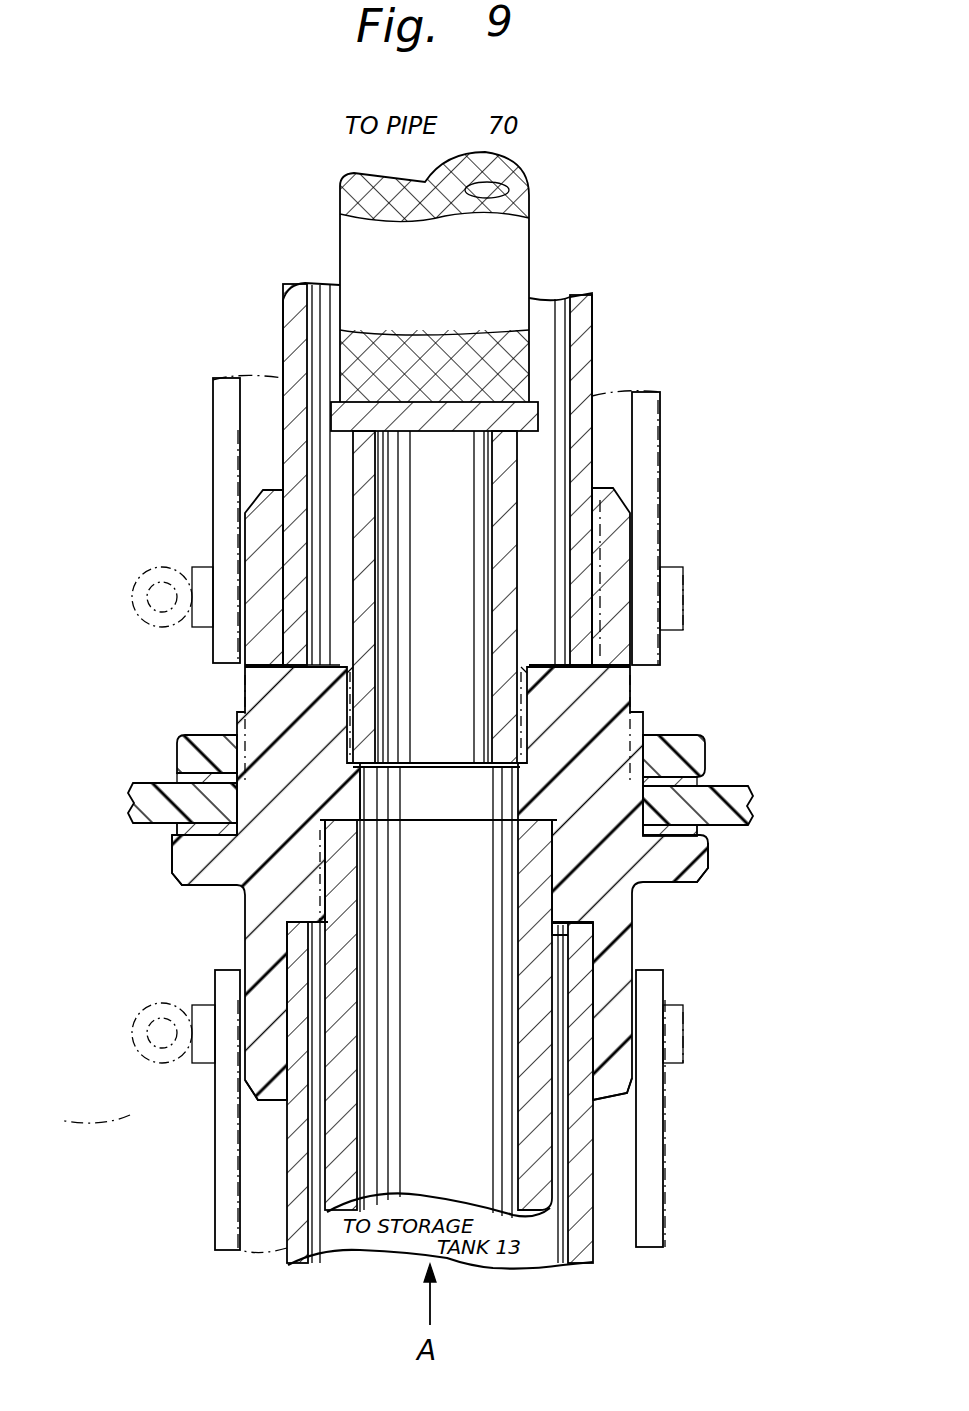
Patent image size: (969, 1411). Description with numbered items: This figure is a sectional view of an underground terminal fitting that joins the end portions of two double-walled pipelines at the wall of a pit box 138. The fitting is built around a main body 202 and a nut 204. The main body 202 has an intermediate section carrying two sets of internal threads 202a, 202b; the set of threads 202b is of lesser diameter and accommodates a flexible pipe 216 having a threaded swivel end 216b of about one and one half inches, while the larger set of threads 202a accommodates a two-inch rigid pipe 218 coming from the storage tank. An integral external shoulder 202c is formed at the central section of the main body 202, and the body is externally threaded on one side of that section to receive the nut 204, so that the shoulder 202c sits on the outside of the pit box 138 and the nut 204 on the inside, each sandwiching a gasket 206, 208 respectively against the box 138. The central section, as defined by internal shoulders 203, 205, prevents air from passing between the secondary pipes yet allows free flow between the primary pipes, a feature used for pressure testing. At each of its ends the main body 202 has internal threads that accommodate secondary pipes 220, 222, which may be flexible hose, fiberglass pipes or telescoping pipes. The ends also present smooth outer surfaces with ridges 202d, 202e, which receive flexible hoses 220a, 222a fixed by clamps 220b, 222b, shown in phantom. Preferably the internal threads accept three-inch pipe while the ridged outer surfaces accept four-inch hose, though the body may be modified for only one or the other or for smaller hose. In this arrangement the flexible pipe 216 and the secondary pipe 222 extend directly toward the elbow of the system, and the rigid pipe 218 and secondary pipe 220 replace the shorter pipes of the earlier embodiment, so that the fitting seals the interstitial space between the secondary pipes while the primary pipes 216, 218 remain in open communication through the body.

The flexible pipe 216 is at (530, 246).
The threaded swivel end 216b is at (349, 522).
The secondary pipe 222 is at (283, 319).
The flexible hose 222a is at (213, 413).
The clamp 222b is at (145, 562).
The main body 202 is at (637, 937).
The internal threads 202a is at (332, 886).
The internal threads 202b is at (347, 712).
The external shoulder 202c is at (708, 855).
The ridges 202d is at (635, 1082).
The ridges 202e is at (630, 508).
The shoulder 203 is at (559, 925).
The nut 204 is at (708, 750).
The shoulder 205 is at (538, 663).
The gasket 206 is at (178, 837).
The gasket 208 is at (177, 773).
The pit box 138 is at (130, 808).
The rigid pipe 218 is at (552, 1147).
The secondary pipe 220 is at (287, 1258).
The flexible hose 220a is at (215, 1120).
The clamp 220b is at (155, 1002).